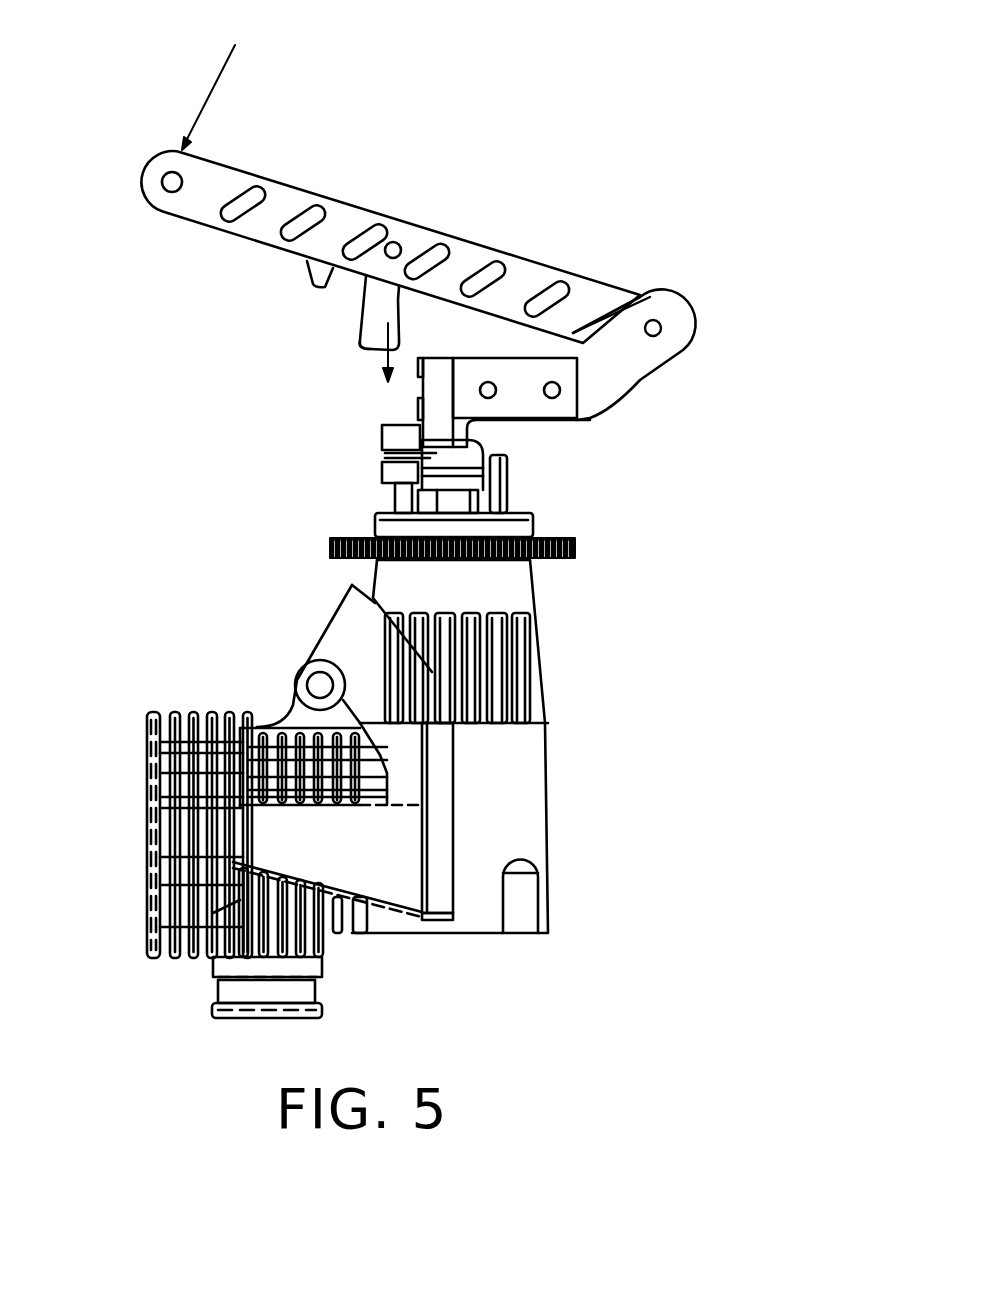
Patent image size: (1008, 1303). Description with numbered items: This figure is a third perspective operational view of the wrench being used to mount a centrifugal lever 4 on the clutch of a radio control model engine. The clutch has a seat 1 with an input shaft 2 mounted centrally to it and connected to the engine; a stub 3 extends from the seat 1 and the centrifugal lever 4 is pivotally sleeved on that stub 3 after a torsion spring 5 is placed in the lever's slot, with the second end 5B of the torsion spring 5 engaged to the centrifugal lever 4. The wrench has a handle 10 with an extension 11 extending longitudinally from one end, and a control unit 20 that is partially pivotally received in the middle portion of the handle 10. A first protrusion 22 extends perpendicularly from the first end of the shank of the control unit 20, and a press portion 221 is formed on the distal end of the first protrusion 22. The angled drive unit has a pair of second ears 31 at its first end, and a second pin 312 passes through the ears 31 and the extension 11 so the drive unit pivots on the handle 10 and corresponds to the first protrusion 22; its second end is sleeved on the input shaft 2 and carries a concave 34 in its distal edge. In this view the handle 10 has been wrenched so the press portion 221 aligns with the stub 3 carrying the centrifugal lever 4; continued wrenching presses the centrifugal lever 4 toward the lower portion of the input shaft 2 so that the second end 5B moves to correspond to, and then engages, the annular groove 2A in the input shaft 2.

The seat 1 is at (380, 520).
The input shaft 2 is at (470, 433).
The annular groove 2A is at (487, 481).
The stub 3 is at (395, 500).
The centrifugal lever 4 is at (385, 472).
The torsion spring 5 is at (430, 452).
The second end 5B is at (495, 462).
The handle 10 is at (427, 189).
The extension 11 is at (593, 322).
The control unit 20 is at (287, 325).
The first protrusion 22 is at (370, 305).
The press portion 221 is at (362, 343).
The second ears 31 is at (662, 298).
The second pin 312 is at (661, 328).
The concave 34 is at (418, 402).